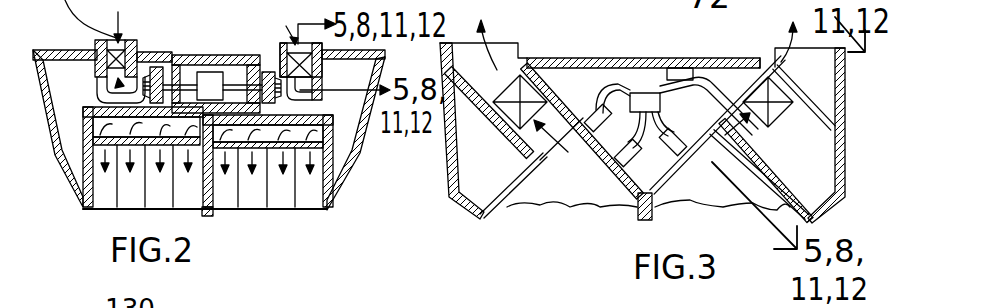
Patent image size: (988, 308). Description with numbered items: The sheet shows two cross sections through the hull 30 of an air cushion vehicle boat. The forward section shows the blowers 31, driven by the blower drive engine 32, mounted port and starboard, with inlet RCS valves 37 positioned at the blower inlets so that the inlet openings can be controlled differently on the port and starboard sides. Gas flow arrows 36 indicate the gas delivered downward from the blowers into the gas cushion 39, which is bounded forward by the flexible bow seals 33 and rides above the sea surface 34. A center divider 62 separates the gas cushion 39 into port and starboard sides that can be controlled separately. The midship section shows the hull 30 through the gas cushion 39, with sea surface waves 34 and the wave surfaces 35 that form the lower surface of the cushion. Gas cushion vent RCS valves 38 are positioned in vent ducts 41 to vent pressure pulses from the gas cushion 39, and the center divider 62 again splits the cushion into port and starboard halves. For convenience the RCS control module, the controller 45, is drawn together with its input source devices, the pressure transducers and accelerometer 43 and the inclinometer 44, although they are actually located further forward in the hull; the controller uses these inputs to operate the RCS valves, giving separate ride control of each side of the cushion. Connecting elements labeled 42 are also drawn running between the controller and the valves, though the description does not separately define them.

In FIG. 2, the ACV hull 30 is at (199, 66).
In FIG. 3, the ACV hull 30 is at (540, 64).
In FIG. 2, the blowers 31 is at (263, 70).
In FIG. 2, the blower drive engine 32 is at (210, 86).
In FIG. 2, the flexible bow seals 33 is at (107, 195).
In FIG. 2, the sea surface 34 is at (70, 190).
In FIG. 3, the sea surface 34 is at (887, 173).
In FIG. 3, the wave surfaces 35 is at (567, 207).
In FIG. 2, the gas flow arrows 36 is at (126, 16).
In FIG. 2, the inlet RCS valves 37 is at (97, 68).
In FIG. 3, the inlet RCS valves 37 is at (712, 193).
In FIG. 3, the gas cushion vent RCS valves 38 is at (512, 107).
In FIG. 3, the gas cushion 39 is at (580, 190).
In FIG. 3, the ducts 41 is at (500, 50).
In FIG. 3, the pipe connector 42 is at (592, 103).
In FIG. 3, the pressure transducers 43 is at (622, 173).
In FIG. 3, the inclinometer 44 is at (677, 68).
In FIG. 3, the controller 45 is at (637, 93).
In FIG. 2, the center divider 62 is at (213, 216).
In FIG. 3, the center divider 62 is at (645, 222).